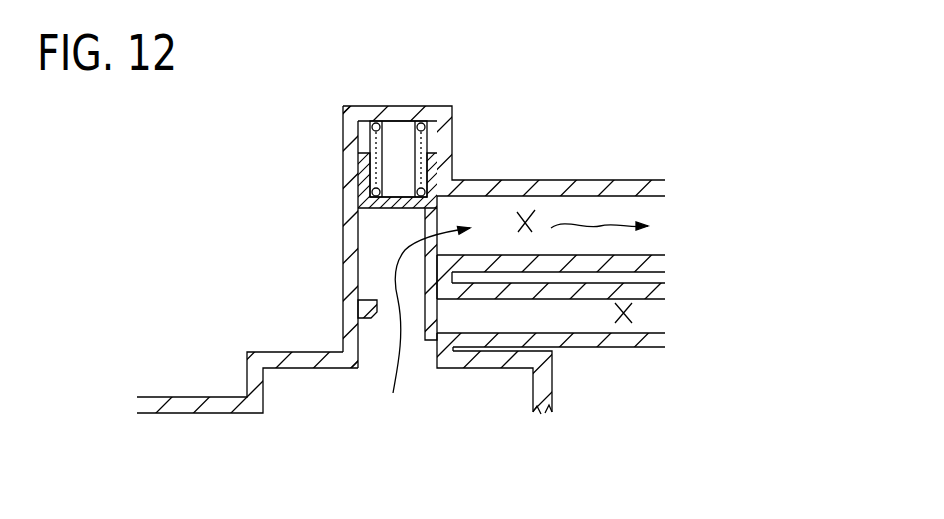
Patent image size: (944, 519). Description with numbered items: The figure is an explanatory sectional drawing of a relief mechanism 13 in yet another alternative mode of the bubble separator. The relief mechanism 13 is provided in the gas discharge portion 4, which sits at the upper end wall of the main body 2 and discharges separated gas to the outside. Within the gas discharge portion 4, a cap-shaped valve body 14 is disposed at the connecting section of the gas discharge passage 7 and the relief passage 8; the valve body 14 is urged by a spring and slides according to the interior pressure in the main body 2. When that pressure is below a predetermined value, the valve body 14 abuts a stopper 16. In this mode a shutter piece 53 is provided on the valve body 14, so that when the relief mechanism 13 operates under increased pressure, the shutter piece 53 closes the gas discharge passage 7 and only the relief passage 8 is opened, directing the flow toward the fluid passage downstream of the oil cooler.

The main body 2 is at (247, 388).
The gas discharge portion 4 is at (338, 254).
The relief mechanism 13 is at (338, 204).
The valve body 14 is at (364, 161).
The stopper 16 is at (370, 307).
The shutter piece 53 is at (432, 308).
The relief passage 8 is at (526, 218).
The gas discharge passage 7 is at (622, 317).